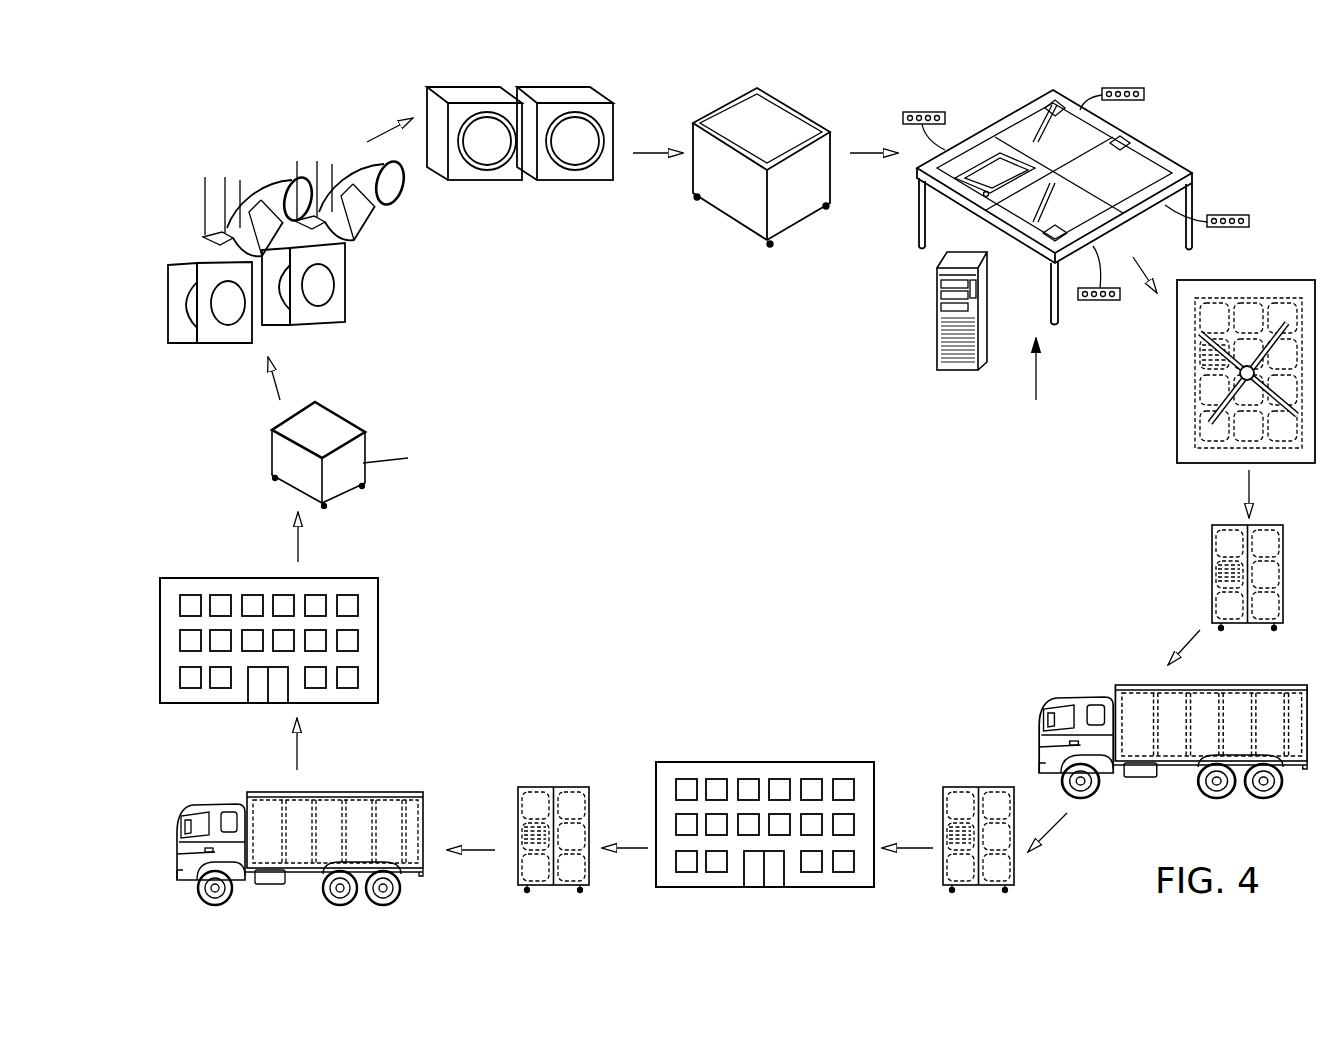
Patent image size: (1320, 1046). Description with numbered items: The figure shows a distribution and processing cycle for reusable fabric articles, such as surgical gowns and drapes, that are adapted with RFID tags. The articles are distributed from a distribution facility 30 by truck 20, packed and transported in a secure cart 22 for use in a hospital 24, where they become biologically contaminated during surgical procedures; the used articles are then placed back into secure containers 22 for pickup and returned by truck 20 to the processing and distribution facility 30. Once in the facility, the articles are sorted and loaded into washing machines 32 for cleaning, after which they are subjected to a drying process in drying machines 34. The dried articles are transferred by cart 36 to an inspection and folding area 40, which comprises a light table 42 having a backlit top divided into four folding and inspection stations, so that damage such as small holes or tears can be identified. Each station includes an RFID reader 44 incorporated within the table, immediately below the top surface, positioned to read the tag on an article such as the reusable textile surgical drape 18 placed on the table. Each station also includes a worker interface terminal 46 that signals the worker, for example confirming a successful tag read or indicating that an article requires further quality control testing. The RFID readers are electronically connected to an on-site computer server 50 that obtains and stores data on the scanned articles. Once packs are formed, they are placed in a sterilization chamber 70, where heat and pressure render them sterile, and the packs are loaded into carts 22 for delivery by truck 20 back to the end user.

The reusable textile surgical drape 18 is at (982, 173).
The truck 20 is at (397, 797).
The secure cart 22 is at (1210, 592).
The hospital 24 is at (768, 762).
The distribution facility 30 is at (377, 597).
The washing machines 32 is at (342, 260).
The drying machines 34 is at (520, 181).
The cart 36 is at (727, 205).
The inspection and folding area 40 is at (1025, 392).
The light table 42 is at (1178, 176).
The RFID reader 44 is at (1125, 140).
The worker interface terminal 46 is at (903, 112).
The on-site computer server 50 is at (935, 330).
The sterilization chamber 70 is at (1180, 425).